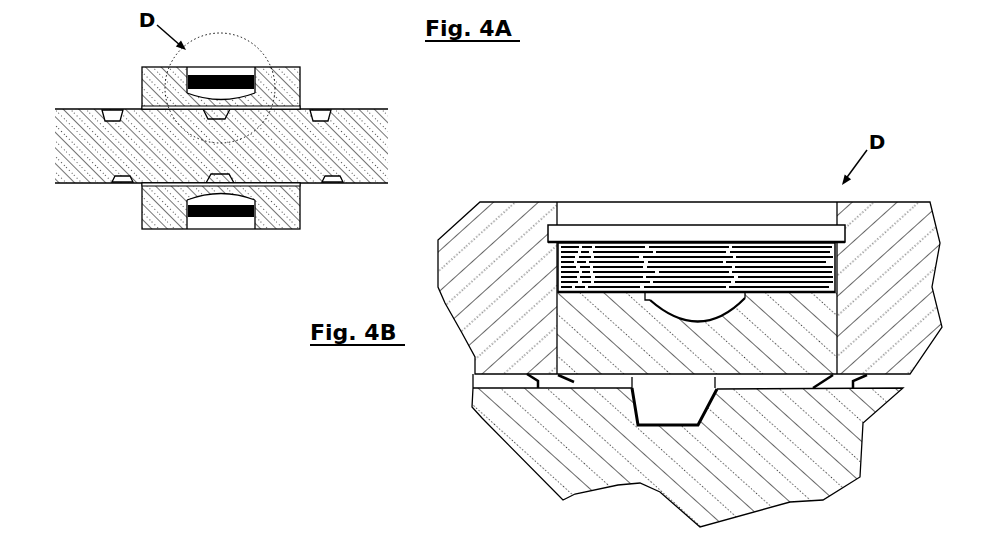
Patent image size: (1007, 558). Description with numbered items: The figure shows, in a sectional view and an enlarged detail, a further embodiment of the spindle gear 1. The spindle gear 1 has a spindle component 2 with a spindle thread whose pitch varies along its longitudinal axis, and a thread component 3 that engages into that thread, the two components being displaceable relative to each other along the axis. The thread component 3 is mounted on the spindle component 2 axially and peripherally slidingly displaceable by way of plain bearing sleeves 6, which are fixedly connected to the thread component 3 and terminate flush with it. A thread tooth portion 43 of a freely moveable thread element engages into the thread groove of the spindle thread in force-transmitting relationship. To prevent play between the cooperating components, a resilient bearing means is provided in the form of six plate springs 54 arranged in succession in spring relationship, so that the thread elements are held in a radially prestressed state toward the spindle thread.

In FIG. 4A, the spindle gear 1 is at (221, 117).
In FIG. 4B, the spindle gear 1 is at (671, 342).
In FIG. 4A, the spindle component 2 is at (303, 110).
In FIG. 4B, the spindle component 2 is at (664, 463).
In FIG. 4A, the thread component 3 is at (288, 72).
In FIG. 4B, the thread component 3 is at (671, 266).
In FIG. 4A, the plain bearing sleeves 6 is at (285, 107).
In FIG. 4B, the plain bearing sleeves 6 is at (482, 382).
In FIG. 4B, the thread tooth portion 43 is at (657, 405).
In FIG. 4B, the plate springs 54 is at (645, 247).